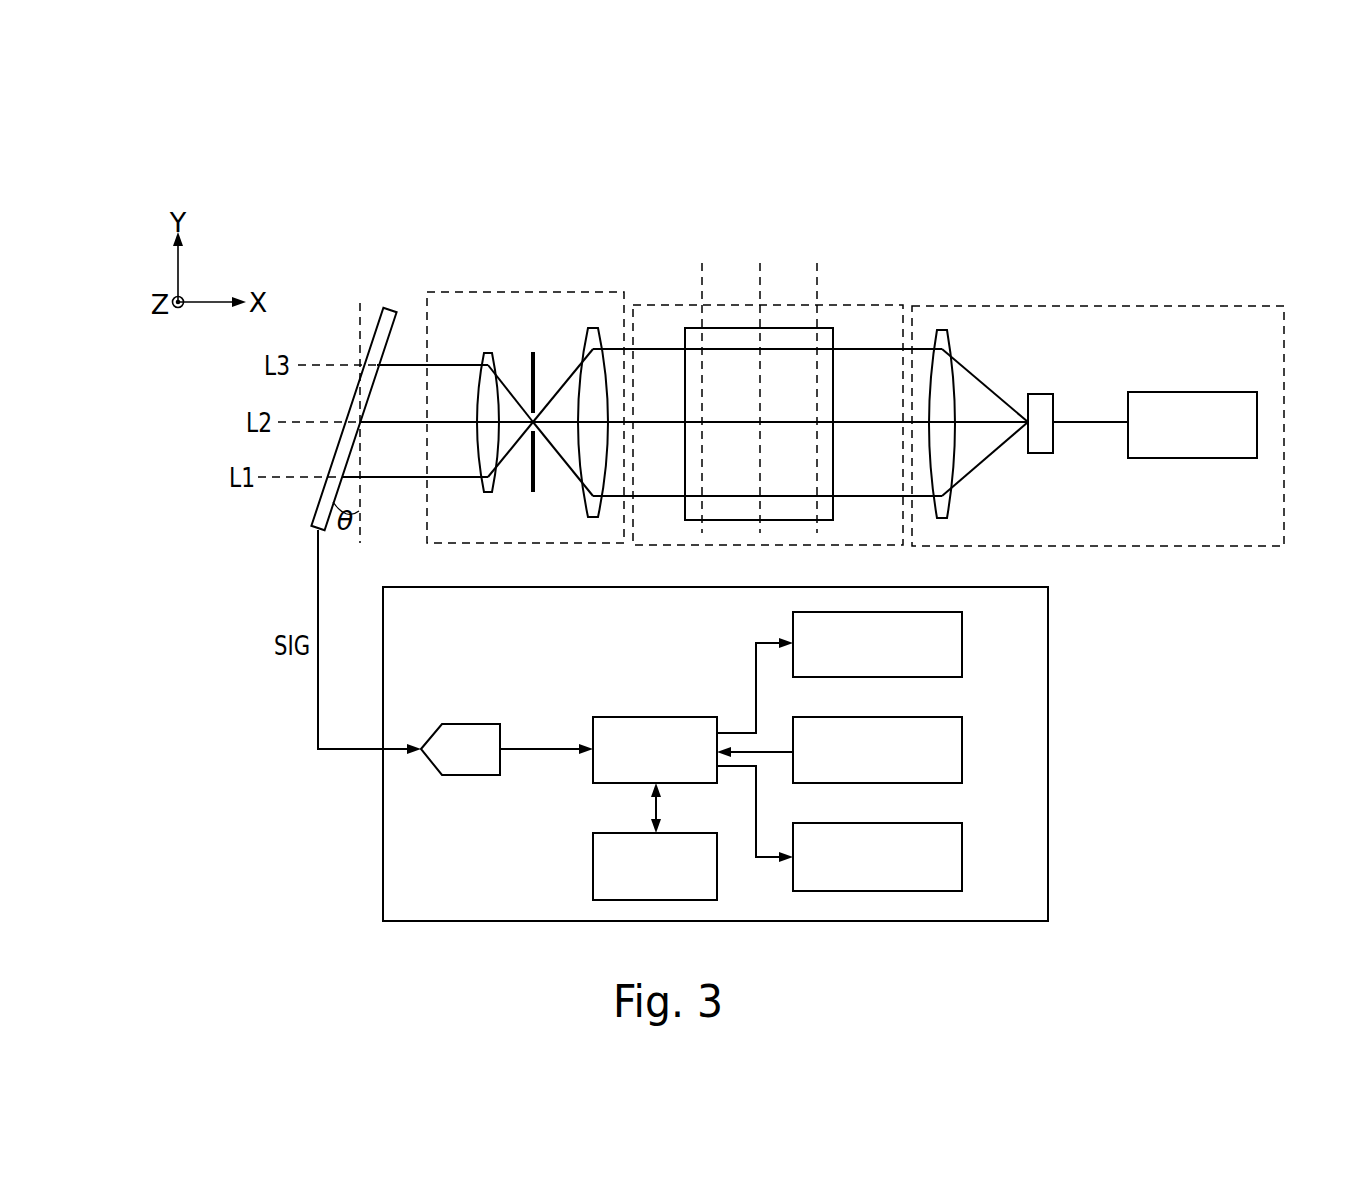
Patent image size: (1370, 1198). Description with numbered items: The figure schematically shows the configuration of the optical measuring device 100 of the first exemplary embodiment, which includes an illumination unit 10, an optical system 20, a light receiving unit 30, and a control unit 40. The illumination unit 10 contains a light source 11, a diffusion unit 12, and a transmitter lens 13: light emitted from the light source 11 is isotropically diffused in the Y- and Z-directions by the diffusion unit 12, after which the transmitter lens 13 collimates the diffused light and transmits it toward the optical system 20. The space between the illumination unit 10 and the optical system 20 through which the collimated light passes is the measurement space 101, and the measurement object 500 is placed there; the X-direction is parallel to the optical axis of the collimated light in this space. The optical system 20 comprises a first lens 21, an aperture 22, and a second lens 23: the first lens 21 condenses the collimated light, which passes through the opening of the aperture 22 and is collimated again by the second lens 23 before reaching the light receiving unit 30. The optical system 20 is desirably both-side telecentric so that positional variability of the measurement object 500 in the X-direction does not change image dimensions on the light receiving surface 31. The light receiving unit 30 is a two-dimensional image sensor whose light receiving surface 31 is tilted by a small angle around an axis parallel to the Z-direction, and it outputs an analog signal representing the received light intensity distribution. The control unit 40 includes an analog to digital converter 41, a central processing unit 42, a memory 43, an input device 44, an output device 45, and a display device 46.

The optical measuring device 100 is at (292, 184).
The illumination unit 10 is at (1253, 306).
The light source 11 is at (1257, 413).
The diffusion unit 12 is at (1040, 393).
The transmitter lens 13 is at (941, 329).
The measurement space 101 is at (882, 304).
The measurement object 500 is at (690, 327).
The optical system 20 is at (432, 292).
The first lens 21 is at (593, 327).
The aperture 22 is at (533, 350).
The second lens 23 is at (489, 352).
The light receiving unit 30 is at (312, 518).
The light receiving surface 31 is at (395, 311).
The control unit 40 is at (383, 878).
The analog to digital converter 41 is at (470, 723).
The central processing unit 42 is at (659, 716).
The memory 43 is at (593, 862).
The input device 44 is at (962, 752).
The output device 45 is at (962, 857).
The display device 46 is at (962, 645).